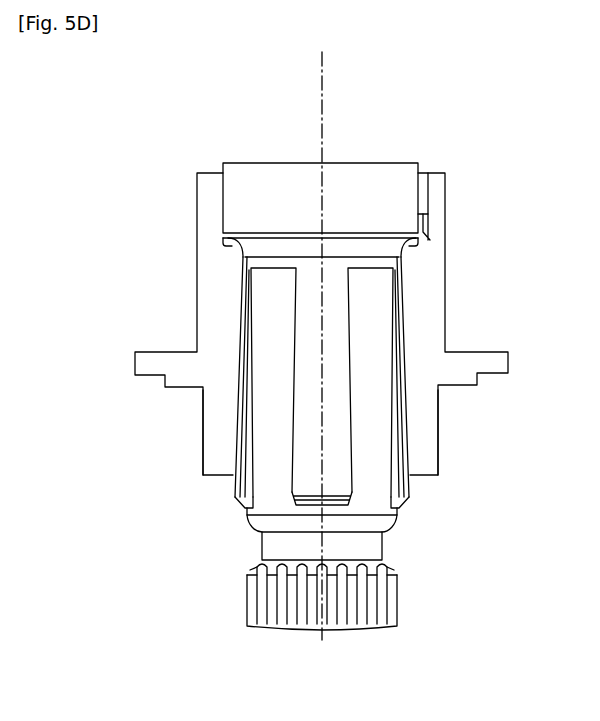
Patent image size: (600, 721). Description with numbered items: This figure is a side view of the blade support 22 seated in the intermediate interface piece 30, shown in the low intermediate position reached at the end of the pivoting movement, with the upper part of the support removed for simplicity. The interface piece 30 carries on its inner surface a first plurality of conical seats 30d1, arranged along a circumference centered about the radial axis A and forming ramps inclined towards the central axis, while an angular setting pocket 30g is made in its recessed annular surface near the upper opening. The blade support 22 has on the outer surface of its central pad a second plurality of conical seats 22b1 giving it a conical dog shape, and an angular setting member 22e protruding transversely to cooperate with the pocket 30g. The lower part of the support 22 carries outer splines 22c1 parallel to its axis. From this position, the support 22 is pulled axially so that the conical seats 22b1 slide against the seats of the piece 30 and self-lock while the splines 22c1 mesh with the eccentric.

The radial axis A is at (322, 73).
The intermediate interface piece 30 is at (176, 315).
The angular setting pocket 30g is at (422, 200).
The angular setting member 22e is at (423, 232).
The blade support 22 is at (245, 547).
The conical seats 22b1 is at (232, 478).
The conical seats 30d1 is at (235, 433).
The outer splines 22c1 is at (290, 631).